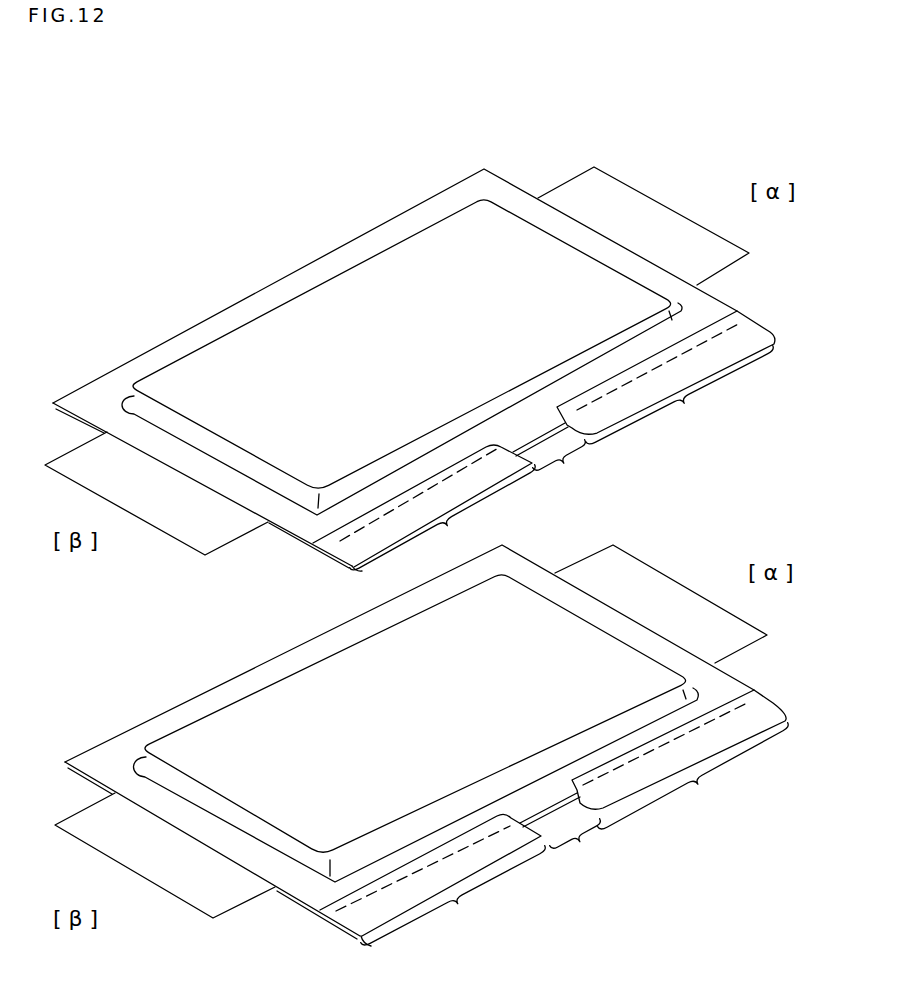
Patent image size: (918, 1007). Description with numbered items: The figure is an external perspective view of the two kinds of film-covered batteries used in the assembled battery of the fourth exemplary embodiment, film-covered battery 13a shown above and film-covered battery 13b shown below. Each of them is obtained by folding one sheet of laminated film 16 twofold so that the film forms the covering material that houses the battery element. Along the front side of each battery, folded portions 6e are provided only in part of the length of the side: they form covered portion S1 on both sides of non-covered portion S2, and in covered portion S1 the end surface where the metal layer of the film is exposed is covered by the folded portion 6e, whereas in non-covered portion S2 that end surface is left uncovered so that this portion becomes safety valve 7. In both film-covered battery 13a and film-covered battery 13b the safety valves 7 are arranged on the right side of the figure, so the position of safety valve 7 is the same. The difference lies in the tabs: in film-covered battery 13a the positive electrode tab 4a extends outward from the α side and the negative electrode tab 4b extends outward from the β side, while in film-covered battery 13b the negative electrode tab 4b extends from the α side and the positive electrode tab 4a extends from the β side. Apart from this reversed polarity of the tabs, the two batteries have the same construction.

The film-covered battery 13a is at (539, 138).
The film-covered battery 13b is at (593, 903).
The safety valve 7 is at (527, 427).
The laminated film 16 is at (132, 430).
The folded portion 6e is at (697, 362).
The positive electrode tab 4a is at (637, 207).
The negative electrode tab 4b is at (172, 515).
The covered portion S1 is at (569, 645).
The non-covered portion S2 is at (569, 657).